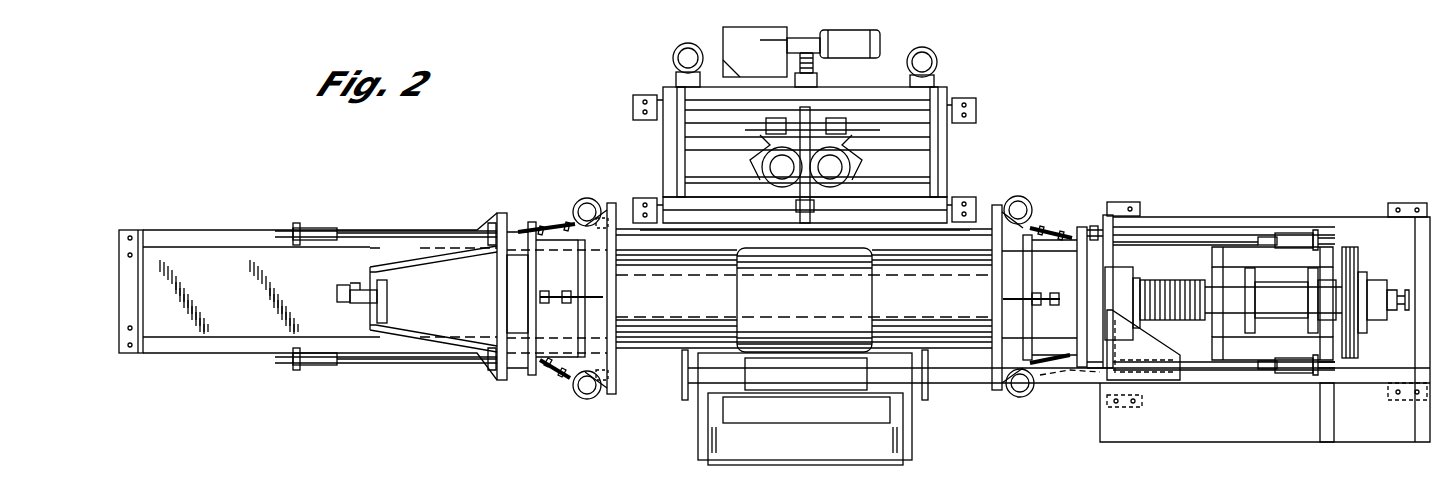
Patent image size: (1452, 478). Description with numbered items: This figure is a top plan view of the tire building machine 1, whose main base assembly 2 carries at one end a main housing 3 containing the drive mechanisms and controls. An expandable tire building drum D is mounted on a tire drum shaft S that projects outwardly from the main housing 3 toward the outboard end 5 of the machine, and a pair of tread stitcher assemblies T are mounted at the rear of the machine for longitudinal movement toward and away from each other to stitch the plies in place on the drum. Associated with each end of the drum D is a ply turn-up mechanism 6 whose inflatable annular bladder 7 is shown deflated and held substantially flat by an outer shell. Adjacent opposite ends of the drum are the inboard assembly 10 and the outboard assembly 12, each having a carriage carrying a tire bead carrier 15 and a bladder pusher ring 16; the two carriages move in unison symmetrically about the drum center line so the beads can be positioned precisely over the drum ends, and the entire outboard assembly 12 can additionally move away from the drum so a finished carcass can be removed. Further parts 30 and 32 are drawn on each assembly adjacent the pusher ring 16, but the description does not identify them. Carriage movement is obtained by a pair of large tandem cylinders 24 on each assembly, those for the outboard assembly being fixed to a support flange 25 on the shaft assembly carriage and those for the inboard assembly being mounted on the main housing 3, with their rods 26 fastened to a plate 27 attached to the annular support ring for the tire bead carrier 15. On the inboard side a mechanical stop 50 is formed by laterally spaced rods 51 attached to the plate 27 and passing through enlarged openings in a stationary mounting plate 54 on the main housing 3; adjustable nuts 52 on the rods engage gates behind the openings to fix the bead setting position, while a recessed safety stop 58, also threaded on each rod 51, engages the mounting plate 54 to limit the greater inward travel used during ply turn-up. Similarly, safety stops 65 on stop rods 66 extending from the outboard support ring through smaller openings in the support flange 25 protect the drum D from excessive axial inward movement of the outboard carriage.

The tire building machine 1 is at (640, 377).
The main base assembly 2 is at (968, 195).
The main housing 3 is at (1230, 386).
The outboard end 5 is at (455, 218).
The ply turn-up mechanism 6 is at (672, 348).
The inflatable annular air bag or bladder 7 is at (700, 252).
The inboard assembly 10 is at (1018, 402).
The outboard assembly 12 is at (568, 398).
The tire bead carrier 15 is at (562, 230).
The bladder pusher ring 16 is at (610, 205).
The tandem cylinders 24 is at (350, 230).
The support flange 25 is at (497, 289).
The rods 26 is at (1091, 230).
The plate 27 is at (521, 345).
The upper clamp ring 30 is at (583, 200).
The bolt 32 is at (548, 226).
The mechanical stop 50 is at (1286, 230).
The rods 51 is at (1220, 242).
The adjustable nuts 52 is at (1262, 238).
The stationary mounting plate 54 is at (1111, 230).
The safety stop 58 is at (1300, 235).
The safety stops 65 is at (310, 232).
The stop rods 66 is at (392, 232).
The tire building drum D is at (820, 353).
The tire drum shaft S is at (1118, 270).
The tread stitcher assemblies T is at (715, 152).